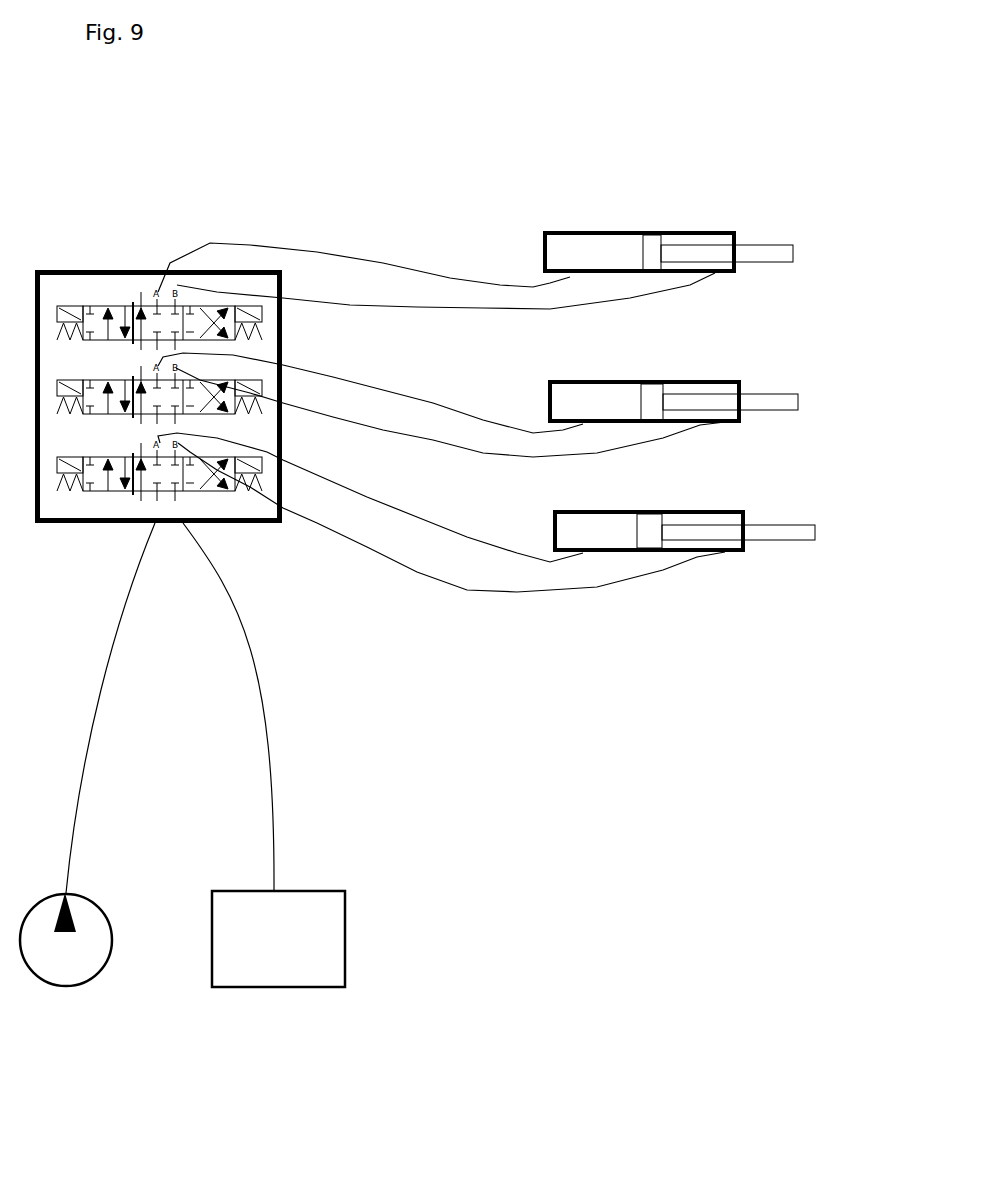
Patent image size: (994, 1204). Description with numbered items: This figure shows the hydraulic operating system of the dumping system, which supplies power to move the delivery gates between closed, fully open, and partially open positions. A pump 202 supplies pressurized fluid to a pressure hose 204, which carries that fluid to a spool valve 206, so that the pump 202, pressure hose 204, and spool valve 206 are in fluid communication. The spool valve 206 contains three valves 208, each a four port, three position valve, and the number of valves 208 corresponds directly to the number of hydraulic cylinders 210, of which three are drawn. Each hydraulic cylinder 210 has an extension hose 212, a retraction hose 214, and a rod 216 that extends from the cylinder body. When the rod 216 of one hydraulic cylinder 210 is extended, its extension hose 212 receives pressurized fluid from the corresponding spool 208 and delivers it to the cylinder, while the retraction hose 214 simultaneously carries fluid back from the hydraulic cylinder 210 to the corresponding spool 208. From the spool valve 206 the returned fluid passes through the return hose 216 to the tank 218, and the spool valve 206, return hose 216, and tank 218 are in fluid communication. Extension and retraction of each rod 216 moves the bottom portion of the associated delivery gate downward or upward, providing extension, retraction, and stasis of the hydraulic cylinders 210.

The pump 202 is at (50, 993).
The pressure hose 204 is at (110, 708).
The spool valve 206 is at (72, 263).
The valve 208 is at (159, 394).
The hydraulic cylinder 210 is at (722, 228).
The extension hose 212 is at (370, 399).
The retraction hose 214 is at (450, 432).
The rod / return hose 216 is at (793, 268).
The tank 218 is at (300, 993).